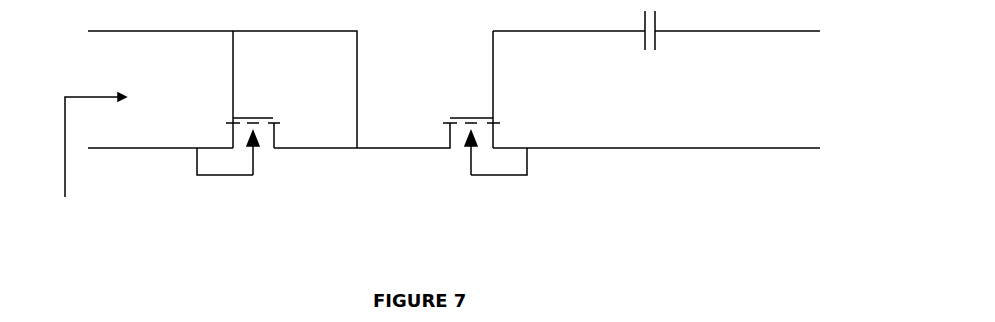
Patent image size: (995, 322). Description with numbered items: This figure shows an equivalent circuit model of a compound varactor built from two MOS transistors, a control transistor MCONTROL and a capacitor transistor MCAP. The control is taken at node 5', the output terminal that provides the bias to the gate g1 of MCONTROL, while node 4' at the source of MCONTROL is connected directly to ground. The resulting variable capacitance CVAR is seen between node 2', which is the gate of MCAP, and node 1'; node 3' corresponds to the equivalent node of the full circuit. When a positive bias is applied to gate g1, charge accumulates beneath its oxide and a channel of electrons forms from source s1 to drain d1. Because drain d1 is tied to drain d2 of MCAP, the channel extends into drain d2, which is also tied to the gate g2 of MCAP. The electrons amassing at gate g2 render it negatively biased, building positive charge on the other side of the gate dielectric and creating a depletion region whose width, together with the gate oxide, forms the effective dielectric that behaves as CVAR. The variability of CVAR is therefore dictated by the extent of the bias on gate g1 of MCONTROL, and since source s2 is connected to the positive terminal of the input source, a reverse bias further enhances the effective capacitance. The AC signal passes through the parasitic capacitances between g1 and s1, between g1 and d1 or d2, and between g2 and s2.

The node 1' is at (160, 163).
The node 2' is at (224, 77).
The node 3' is at (574, 28).
The node 4' is at (656, 139).
The node 5' is at (737, 18).
The gate g1 is at (506, 89).
The gate g2 is at (254, 55).
The source s1 is at (517, 170).
The source s2 is at (208, 170).
The drain d1 is at (405, 150).
The drain d2 is at (317, 162).
The transistor MCAP is at (253, 134).
The transistor MCONTROL is at (458, 134).
The variable capacitor CVAR is at (68, 137).